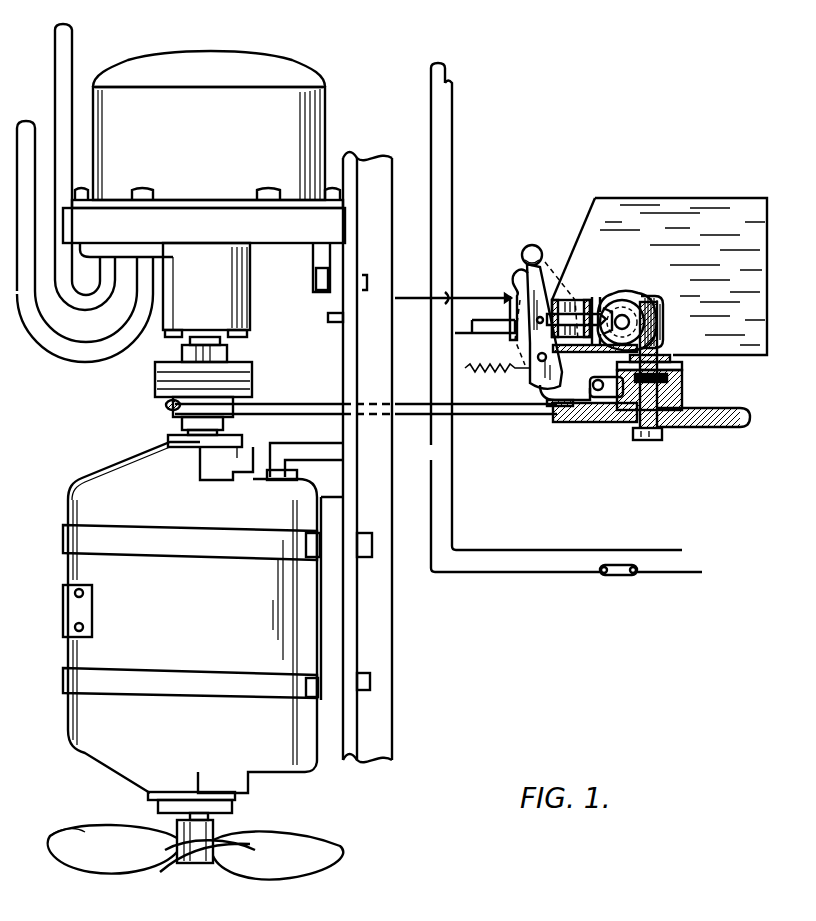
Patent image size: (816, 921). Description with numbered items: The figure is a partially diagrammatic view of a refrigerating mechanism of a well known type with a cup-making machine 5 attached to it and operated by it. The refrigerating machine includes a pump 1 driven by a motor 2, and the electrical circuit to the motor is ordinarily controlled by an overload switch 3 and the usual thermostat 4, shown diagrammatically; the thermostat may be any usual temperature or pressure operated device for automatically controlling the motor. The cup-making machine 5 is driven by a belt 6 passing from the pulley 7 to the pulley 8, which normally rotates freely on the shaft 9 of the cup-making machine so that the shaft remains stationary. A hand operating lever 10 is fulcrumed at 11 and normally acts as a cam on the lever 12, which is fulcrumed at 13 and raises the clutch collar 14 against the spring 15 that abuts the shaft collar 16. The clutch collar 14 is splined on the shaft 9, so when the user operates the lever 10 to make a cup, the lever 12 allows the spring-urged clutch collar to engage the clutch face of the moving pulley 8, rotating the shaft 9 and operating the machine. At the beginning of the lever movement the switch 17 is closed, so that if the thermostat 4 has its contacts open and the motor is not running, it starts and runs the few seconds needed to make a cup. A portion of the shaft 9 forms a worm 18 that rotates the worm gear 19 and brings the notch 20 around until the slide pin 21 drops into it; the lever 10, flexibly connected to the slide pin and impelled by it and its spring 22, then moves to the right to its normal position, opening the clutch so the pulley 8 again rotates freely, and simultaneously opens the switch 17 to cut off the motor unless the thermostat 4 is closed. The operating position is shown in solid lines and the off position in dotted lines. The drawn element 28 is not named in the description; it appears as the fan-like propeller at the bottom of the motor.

The pump 1 is at (233, 52).
The motor 2 is at (155, 465).
The overload switch 3 is at (604, 591).
The thermostat 4 is at (450, 82).
The cup-making machine 5 is at (731, 207).
The belt 6 is at (297, 404).
The pulley 7 is at (170, 416).
The pulley 8 is at (732, 428).
The shaft 9 is at (647, 433).
The hand operating lever 10 is at (532, 245).
The fulcrum 11 is at (540, 360).
The lever 12 is at (550, 398).
The fulcrum 13 is at (596, 391).
The clutch collar 14 is at (683, 395).
The spring 15 is at (673, 366).
The shaft collar 16 is at (672, 358).
The switch 17 is at (510, 290).
The worm 18 is at (663, 331).
The worm gear 19 is at (637, 292).
The notch 20 is at (609, 307).
The slide pin 21 is at (578, 313).
The spring 22 is at (570, 299).
The propeller 28 is at (290, 833).